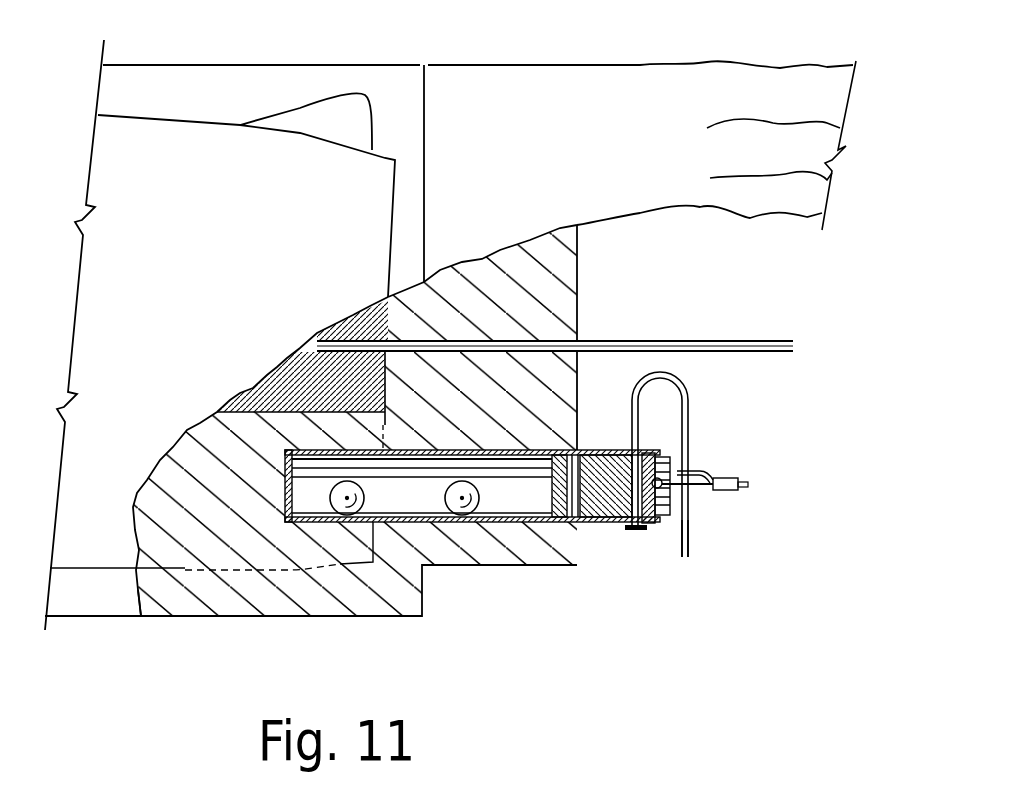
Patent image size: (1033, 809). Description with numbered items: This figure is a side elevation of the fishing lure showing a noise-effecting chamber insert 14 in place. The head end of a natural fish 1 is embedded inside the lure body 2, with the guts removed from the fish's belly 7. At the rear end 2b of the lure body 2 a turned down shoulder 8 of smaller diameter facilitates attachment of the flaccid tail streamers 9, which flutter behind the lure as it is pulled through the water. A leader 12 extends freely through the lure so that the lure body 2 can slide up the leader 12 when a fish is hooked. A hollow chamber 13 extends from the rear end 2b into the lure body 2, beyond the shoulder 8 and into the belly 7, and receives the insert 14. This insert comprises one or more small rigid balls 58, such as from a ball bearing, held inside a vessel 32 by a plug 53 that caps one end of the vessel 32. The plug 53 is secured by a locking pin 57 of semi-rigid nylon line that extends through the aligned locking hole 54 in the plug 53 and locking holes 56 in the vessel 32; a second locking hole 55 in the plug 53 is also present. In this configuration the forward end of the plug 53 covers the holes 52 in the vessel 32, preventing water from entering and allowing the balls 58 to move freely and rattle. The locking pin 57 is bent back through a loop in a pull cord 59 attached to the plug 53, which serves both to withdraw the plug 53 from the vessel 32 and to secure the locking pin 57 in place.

The natural fish 1 is at (193, 147).
The tail streamers 9 is at (598, 82).
The lure body 2 is at (305, 600).
The rear end of the lure body 2b is at (578, 253).
The belly 7 is at (160, 560).
The hollow chamber 13 is at (295, 523).
The turned down shoulder 8 is at (490, 565).
The leader 12 is at (622, 347).
The chamber insert 14 is at (690, 515).
The vessel 32 is at (402, 523).
The holes 52 is at (605, 452).
The plug 53 is at (650, 452).
The locking hole 54 is at (620, 452).
The locking hole 55 is at (574, 525).
The locking holes 56 is at (620, 528).
The locking pin 57 is at (686, 410).
The rigid balls 58 is at (450, 507).
The pull cord 59 is at (707, 477).